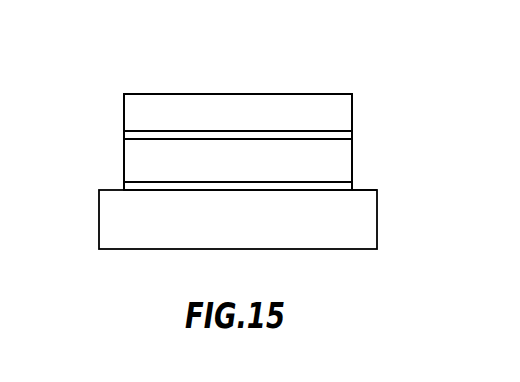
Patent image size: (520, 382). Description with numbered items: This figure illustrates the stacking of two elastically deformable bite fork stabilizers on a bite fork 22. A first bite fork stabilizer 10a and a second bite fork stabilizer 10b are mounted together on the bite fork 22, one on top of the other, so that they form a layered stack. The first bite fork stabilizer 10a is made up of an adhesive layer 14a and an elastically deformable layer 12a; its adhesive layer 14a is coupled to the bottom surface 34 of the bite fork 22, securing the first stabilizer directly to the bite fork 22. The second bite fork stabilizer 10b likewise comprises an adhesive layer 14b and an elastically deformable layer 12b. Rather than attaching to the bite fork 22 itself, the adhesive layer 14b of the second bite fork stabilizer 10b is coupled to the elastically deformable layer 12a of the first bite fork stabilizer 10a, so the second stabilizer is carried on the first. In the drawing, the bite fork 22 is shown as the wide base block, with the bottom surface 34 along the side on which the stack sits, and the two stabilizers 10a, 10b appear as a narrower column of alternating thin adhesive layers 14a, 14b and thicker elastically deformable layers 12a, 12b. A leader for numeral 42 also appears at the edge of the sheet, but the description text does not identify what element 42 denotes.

The second bite fork stabilizer 10b is at (360, 116).
The first bite fork stabilizer 10a is at (360, 156).
The elastically deformable layer 12b is at (140, 110).
The adhesive layer 14b is at (130, 137).
The elastically deformable layer 12a is at (139, 159).
The adhesive layer 14a is at (130, 184).
The bottom surface 34 is at (373, 189).
The bite fork 22 is at (384, 235).
The connecting member 42 is at (0, 380).